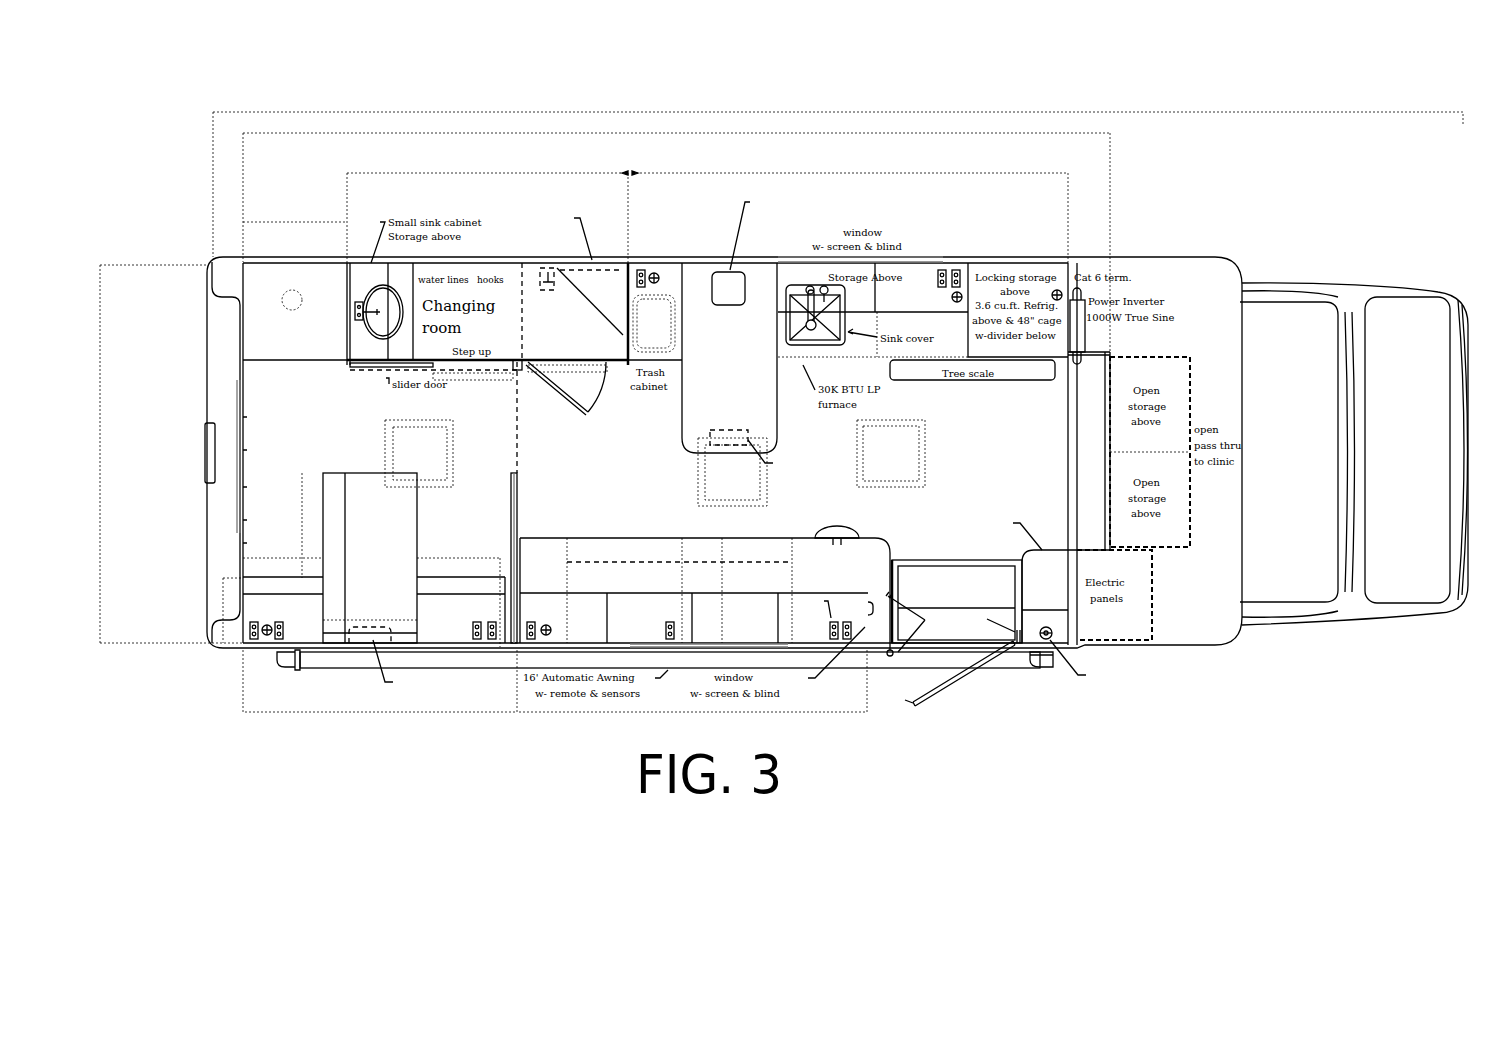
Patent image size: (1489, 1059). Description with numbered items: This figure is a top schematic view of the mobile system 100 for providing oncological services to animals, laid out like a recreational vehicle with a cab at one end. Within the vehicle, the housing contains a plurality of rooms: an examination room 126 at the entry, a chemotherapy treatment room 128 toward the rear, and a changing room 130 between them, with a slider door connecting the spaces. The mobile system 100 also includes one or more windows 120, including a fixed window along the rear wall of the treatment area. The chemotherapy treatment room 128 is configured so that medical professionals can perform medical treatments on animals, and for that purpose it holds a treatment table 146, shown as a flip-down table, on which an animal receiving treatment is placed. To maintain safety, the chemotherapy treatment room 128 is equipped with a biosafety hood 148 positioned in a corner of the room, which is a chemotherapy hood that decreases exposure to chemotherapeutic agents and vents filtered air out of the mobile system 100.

The mobile system 100 is at (632, 55).
The window 120 is at (218, 372).
The examination room 126 is at (620, 499).
The chemotherapy treatment room 128 is at (340, 461).
The changing room 130 is at (577, 328).
The treatment table 146 is at (407, 547).
The biosafety hood 148 is at (258, 280).